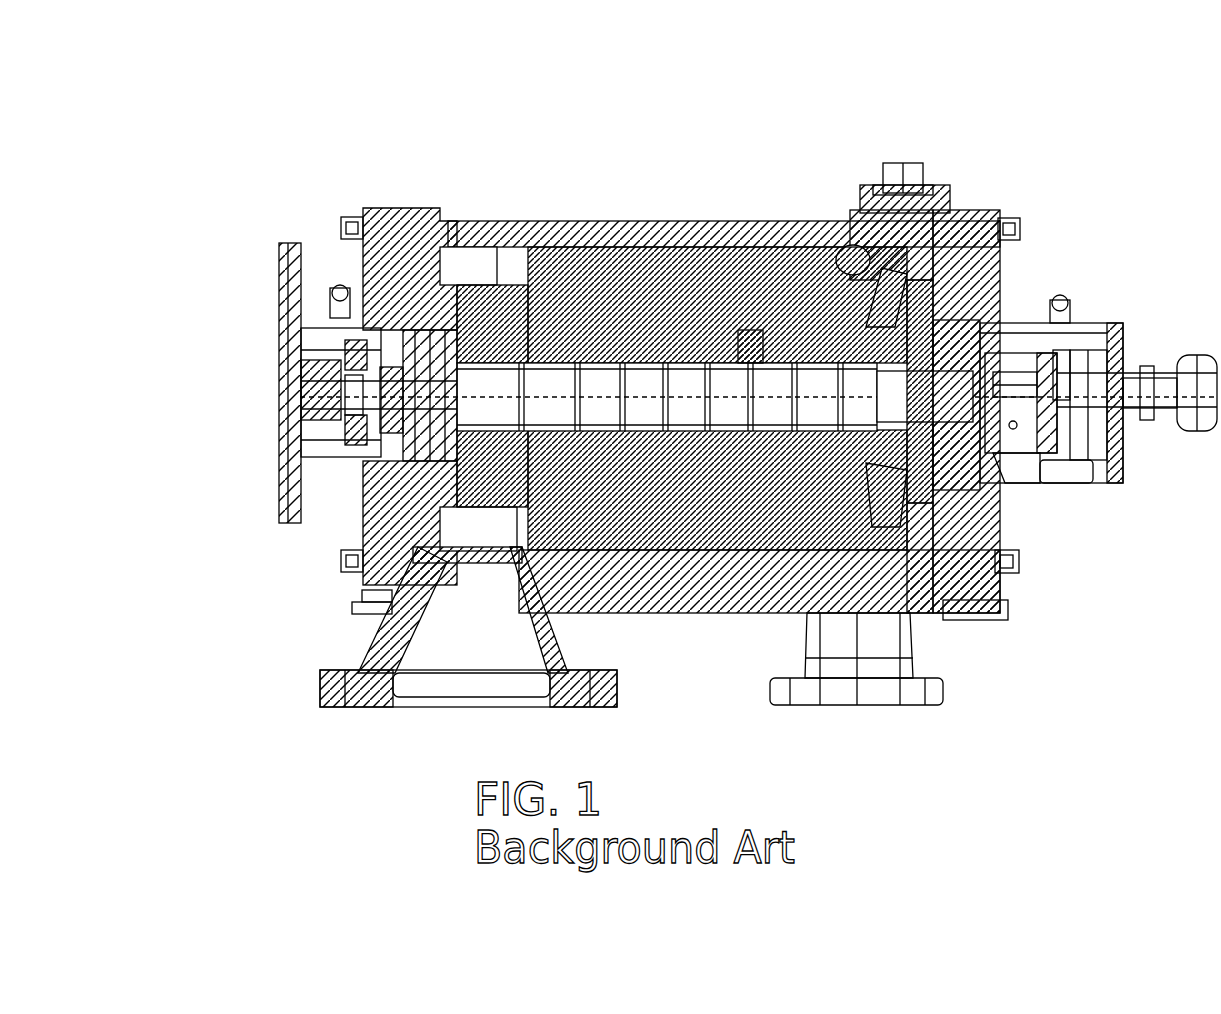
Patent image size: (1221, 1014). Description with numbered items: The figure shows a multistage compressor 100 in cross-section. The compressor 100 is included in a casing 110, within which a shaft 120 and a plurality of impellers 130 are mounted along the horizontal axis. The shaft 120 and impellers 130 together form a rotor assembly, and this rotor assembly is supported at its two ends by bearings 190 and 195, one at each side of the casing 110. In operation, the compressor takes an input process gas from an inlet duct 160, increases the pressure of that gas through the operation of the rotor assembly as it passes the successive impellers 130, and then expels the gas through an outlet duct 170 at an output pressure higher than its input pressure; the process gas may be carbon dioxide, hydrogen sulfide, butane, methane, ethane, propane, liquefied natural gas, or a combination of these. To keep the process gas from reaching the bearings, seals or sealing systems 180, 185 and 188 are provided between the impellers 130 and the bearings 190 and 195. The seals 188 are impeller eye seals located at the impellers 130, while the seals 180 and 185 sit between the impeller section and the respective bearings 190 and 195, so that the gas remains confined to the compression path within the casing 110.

The multistage compressor 100 is at (540, 756).
The casing 110 is at (693, 225).
The shaft 120 is at (833, 357).
The impellers 130 is at (707, 325).
The inlet duct 160 is at (478, 310).
The outlet duct 170 is at (847, 539).
The seal 180 is at (403, 360).
The seal 185 is at (950, 345).
The impeller eye seals 188 is at (770, 340).
The bearing 190 is at (297, 403).
The bearing 195 is at (973, 370).